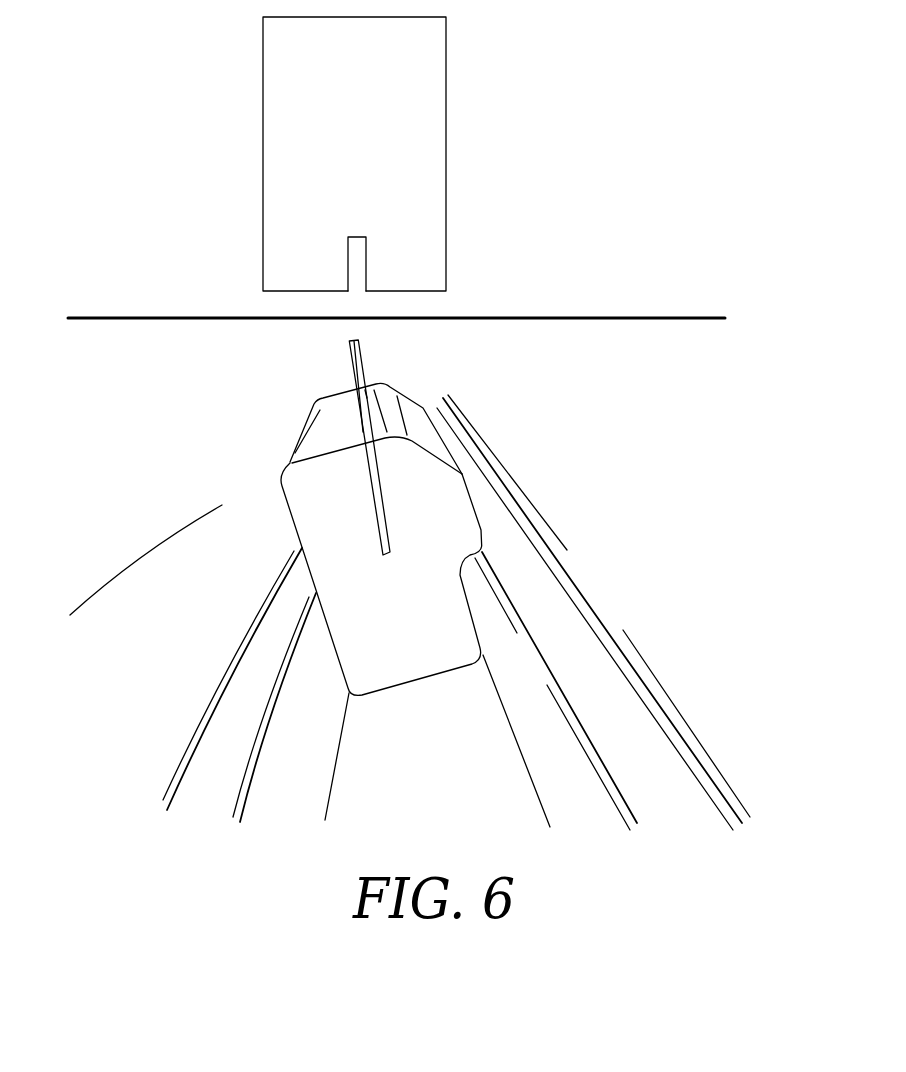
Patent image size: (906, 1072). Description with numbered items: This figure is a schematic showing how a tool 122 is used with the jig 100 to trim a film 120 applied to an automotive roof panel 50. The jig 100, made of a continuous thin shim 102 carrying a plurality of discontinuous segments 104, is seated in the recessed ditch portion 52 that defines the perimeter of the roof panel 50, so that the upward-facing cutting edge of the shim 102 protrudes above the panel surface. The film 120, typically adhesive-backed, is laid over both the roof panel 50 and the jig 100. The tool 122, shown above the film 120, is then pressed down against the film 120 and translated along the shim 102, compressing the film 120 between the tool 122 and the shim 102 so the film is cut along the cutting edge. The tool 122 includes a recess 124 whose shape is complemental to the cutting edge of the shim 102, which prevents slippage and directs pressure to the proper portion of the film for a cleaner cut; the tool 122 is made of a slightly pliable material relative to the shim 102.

The roof panel 50 is at (546, 499).
The ditch portion 52 is at (437, 767).
The jig 100 is at (323, 517).
The shim 102 is at (281, 491).
The segments 104 is at (382, 600).
The film 120 is at (572, 317).
The tool 122 is at (423, 55).
The recess 124 is at (355, 262).